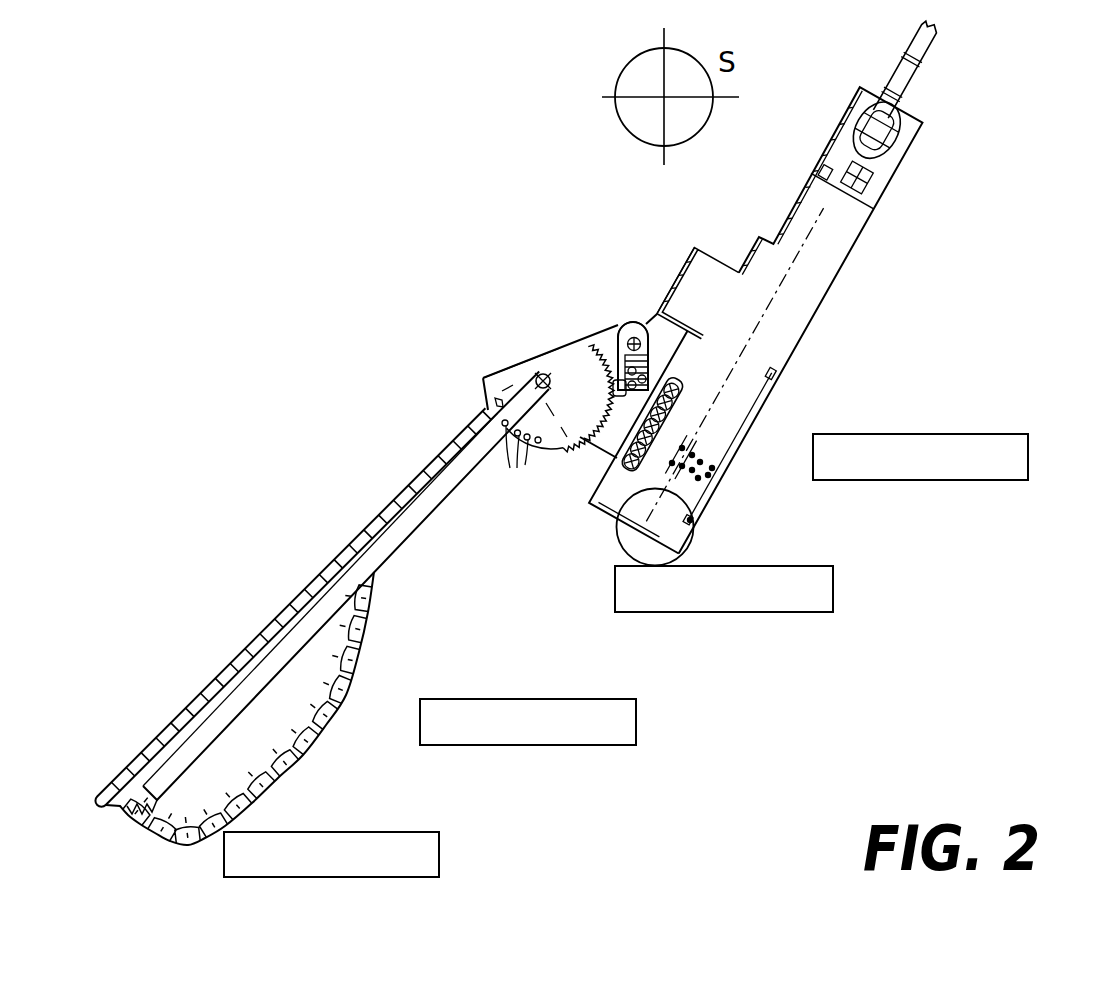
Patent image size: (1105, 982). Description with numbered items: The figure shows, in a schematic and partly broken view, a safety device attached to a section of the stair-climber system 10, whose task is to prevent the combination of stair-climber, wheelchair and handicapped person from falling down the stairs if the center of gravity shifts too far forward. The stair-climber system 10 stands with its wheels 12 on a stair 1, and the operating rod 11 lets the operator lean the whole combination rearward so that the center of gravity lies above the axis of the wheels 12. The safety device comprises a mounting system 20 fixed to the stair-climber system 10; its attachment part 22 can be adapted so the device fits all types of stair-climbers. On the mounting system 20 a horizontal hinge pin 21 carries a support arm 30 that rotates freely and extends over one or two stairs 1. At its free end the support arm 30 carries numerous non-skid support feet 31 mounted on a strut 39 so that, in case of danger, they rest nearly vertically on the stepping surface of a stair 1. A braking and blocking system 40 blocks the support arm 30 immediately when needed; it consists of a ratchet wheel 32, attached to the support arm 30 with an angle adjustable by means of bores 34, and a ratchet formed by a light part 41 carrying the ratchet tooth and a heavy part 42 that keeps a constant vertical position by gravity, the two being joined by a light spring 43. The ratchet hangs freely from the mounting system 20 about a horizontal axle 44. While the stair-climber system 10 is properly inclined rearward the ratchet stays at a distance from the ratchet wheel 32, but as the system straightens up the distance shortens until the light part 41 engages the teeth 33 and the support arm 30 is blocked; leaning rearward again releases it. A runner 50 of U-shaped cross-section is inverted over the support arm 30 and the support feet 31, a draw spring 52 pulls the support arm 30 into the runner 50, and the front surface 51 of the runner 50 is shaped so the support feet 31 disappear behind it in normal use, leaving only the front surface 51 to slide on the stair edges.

The stair 1 is at (1003, 457).
The stair-climber system 10 is at (848, 243).
The operating rod 11 is at (932, 60).
The wheels 12 is at (626, 548).
The mounting system 20 is at (601, 336).
The horizontal hinge pin 21 is at (513, 368).
The attachment part 22 is at (668, 420).
The support arm 30 is at (440, 465).
The non-skid support feet 31 is at (293, 773).
The ratchet wheel 32 is at (483, 380).
The teeth 33 is at (580, 440).
The bores 34 is at (518, 463).
The strut 39 is at (225, 742).
The braking and blocking system 40 is at (645, 316).
The light ratchet part 41 is at (618, 350).
The heavy ratchet part 42 is at (656, 352).
The light spring 43 is at (684, 383).
The horizontal axle 44 is at (630, 323).
The runner 50 is at (372, 520).
The front surface 51 is at (357, 670).
The draw spring 52 is at (126, 812).